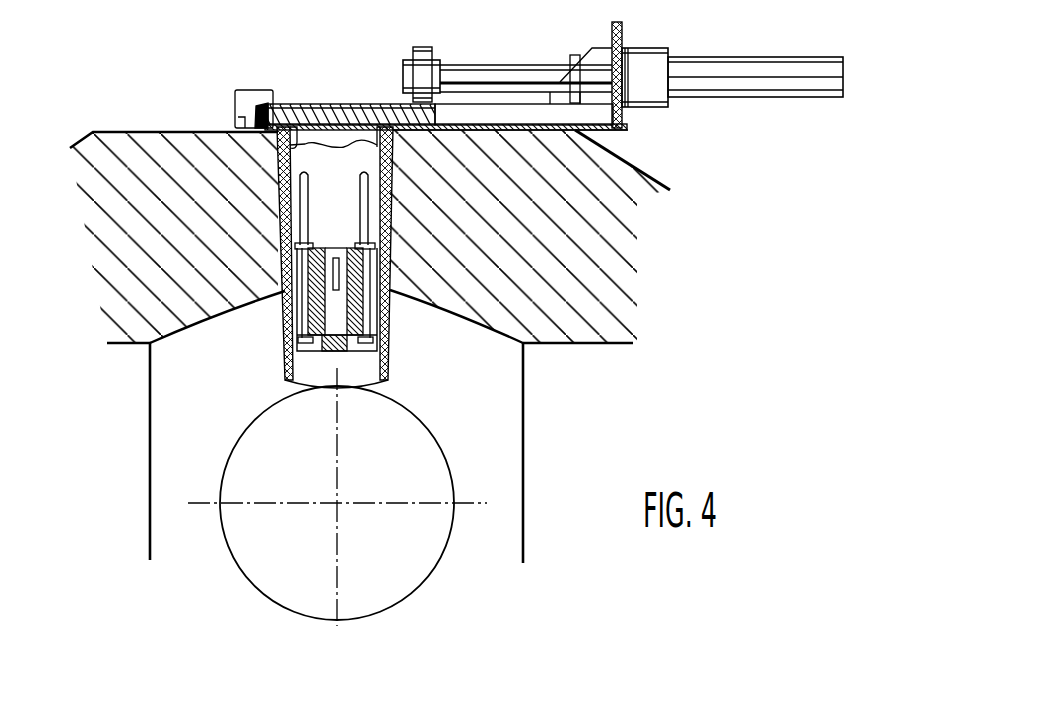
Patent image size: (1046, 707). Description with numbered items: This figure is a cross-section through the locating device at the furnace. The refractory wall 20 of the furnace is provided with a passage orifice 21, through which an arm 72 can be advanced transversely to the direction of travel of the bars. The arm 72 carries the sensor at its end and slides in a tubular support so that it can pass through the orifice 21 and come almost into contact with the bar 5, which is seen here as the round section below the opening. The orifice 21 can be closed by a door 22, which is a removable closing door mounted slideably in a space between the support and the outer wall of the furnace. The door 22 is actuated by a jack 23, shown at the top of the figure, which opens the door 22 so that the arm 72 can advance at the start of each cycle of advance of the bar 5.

The bar 5 is at (433, 430).
The wall 20 is at (177, 175).
The passage orifice 21 is at (300, 146).
The door 22 is at (337, 117).
The jack 23 is at (653, 72).
The arm 72 is at (389, 331).